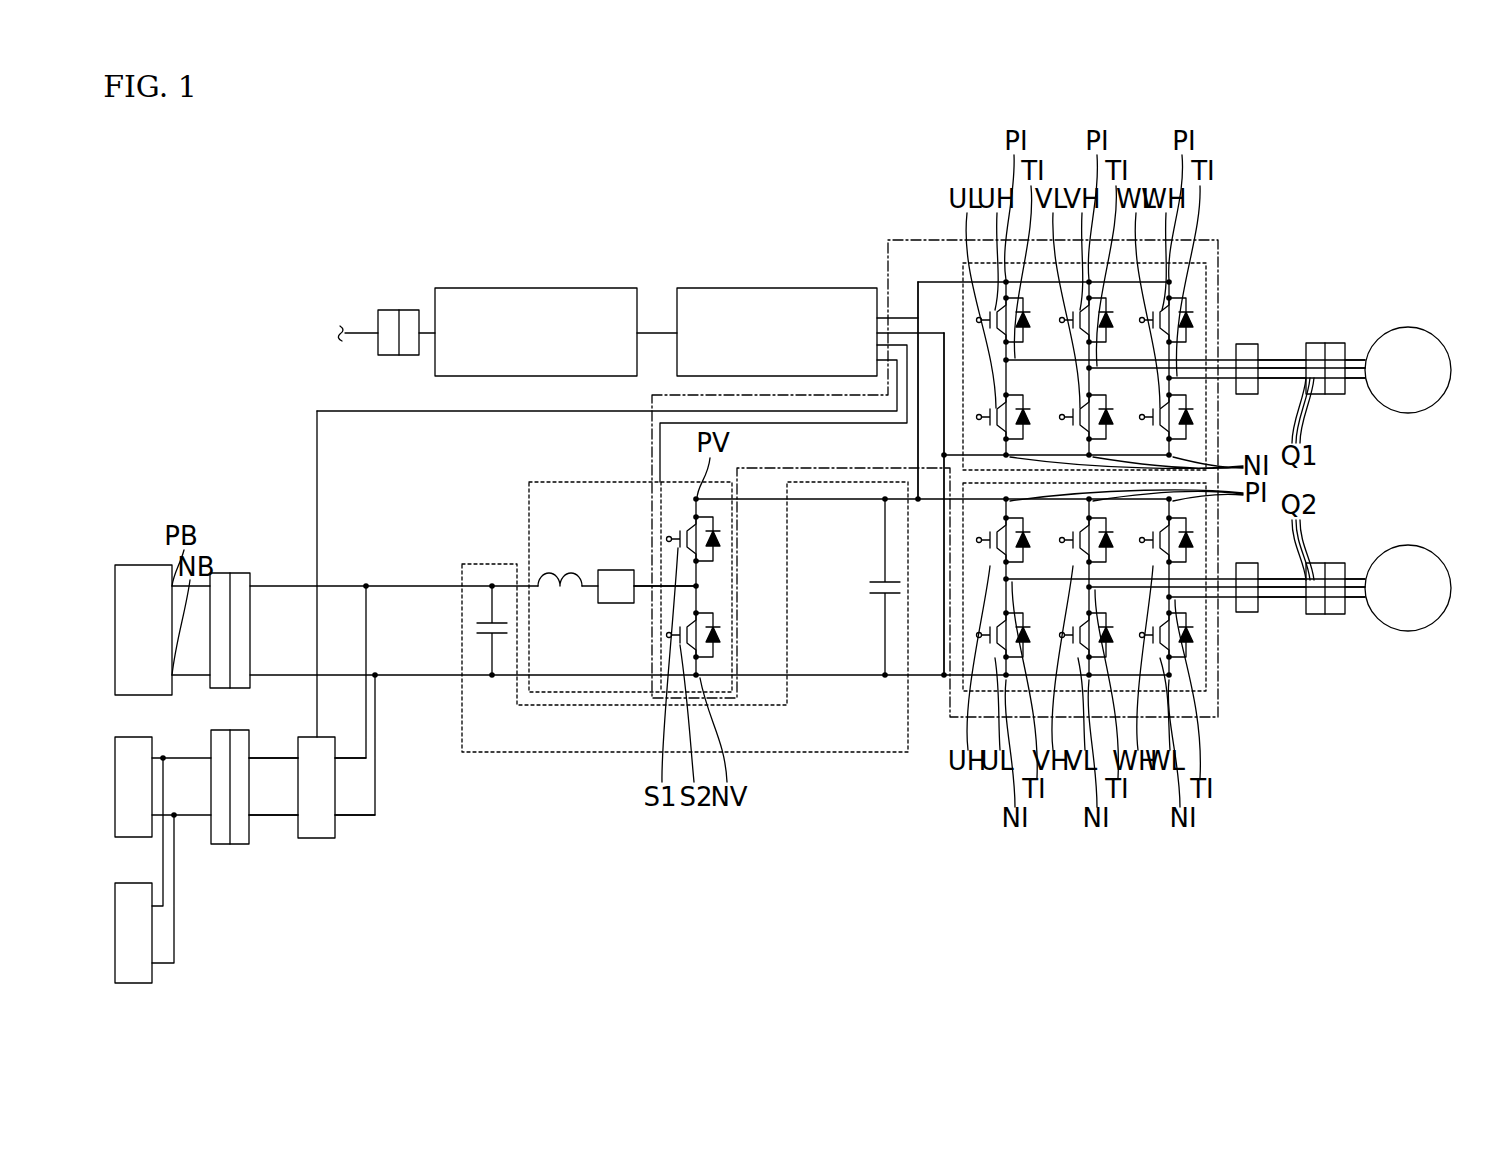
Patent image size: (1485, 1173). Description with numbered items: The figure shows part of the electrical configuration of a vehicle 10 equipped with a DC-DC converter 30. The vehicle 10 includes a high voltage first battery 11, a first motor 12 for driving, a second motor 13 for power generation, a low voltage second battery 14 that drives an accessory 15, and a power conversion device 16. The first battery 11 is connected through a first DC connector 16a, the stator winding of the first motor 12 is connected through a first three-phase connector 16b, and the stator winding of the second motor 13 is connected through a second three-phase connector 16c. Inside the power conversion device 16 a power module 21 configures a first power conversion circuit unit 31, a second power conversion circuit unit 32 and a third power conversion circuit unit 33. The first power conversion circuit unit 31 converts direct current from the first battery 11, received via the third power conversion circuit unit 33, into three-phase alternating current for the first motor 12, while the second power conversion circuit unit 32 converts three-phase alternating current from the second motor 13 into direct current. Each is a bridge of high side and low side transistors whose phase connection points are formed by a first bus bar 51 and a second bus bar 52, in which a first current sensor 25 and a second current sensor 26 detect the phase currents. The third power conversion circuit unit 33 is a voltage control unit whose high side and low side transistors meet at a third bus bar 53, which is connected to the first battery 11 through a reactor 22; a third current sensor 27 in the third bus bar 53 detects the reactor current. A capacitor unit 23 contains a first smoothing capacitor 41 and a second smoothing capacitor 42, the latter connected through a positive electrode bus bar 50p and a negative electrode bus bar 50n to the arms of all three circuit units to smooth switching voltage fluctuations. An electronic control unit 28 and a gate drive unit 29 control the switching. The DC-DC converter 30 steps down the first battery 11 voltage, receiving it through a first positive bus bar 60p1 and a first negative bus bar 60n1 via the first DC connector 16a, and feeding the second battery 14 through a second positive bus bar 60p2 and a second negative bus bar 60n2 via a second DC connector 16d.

The vehicle 10 is at (1298, 140).
The first battery 11 is at (140, 565).
The first motor 12 is at (1406, 327).
The second motor 13 is at (1406, 545).
The second battery 14 is at (140, 737).
The accessory 15 is at (140, 883).
The power conversion device 16 is at (1153, 140).
The first DC connector 16a is at (230, 573).
The first three-phase connector 16b is at (1325, 343).
The second three-phase connector 16c is at (1325, 614).
The second DC connector 16d is at (230, 844).
The power module 21 is at (1164, 431).
The reactor 22 is at (558, 573).
The capacitor unit 23 is at (492, 564).
The first current sensor 25 is at (1247, 344).
The second current sensor 26 is at (1247, 612).
The third current sensor 27 is at (616, 570).
The electronic control unit 28 is at (540, 288).
The gate drive unit 29 is at (777, 288).
The DC-DC converter 30 is at (330, 838).
The first power conversion circuit unit 31 is at (1212, 270).
The second power conversion circuit unit 32 is at (1212, 538).
The third power conversion circuit unit 33 is at (637, 482).
The first smoothing capacitor 41 is at (488, 636).
The second smoothing capacitor 42 is at (880, 600).
The positive electrode bus bar 50p is at (923, 503).
The negative electrode bus bar 50n is at (944, 680).
The first bus bar 51 is at (1288, 362).
The second bus bar 52 is at (1288, 598).
The third bus bar 53 is at (640, 590).
The first positive bus bar 60p1 is at (348, 758).
The first negative bus bar 60n1 is at (357, 815).
The second positive bus bar 60p2 is at (282, 758).
The second negative bus bar 60n2 is at (260, 815).